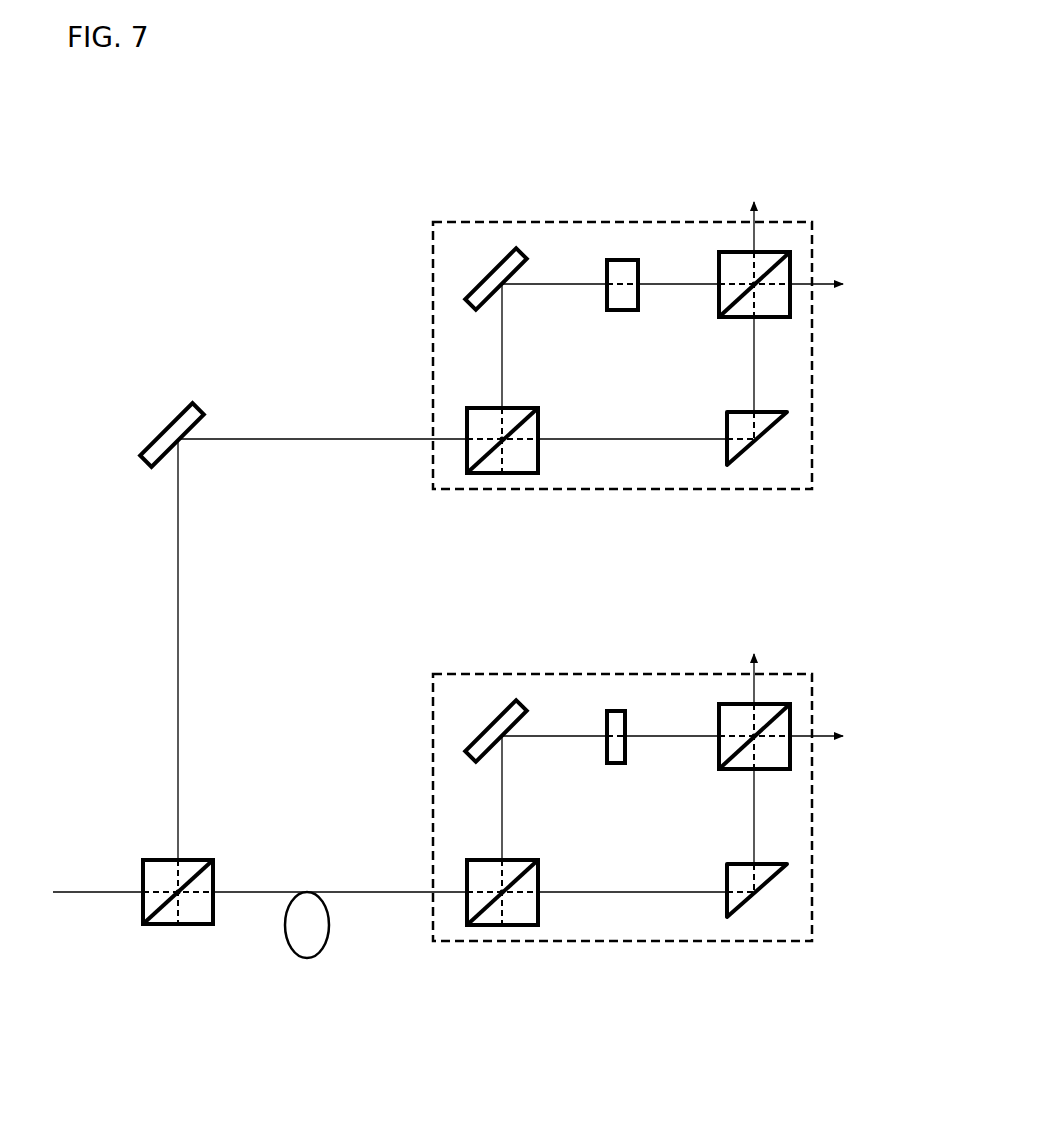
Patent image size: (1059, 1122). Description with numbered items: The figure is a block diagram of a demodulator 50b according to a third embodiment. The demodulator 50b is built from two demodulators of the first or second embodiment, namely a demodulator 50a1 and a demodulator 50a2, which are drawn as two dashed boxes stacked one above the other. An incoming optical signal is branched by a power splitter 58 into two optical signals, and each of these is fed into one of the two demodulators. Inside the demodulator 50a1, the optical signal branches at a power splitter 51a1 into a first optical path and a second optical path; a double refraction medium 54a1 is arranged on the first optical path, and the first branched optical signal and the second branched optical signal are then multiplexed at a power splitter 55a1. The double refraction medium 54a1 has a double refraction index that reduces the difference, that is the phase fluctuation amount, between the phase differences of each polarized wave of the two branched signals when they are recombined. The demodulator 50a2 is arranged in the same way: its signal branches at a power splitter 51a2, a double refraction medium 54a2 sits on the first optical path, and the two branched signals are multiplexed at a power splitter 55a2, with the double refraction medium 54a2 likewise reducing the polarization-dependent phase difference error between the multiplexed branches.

The demodulator 50b is at (207, 202).
The demodulator 50a1 is at (748, 490).
The demodulator 50a2 is at (667, 942).
The power splitter 51a1 is at (467, 410).
The power splitter 51a2 is at (510, 926).
The double refraction medium 54a1 is at (630, 259).
The double refraction medium 54a2 is at (620, 711).
The power splitter 55a1 is at (781, 251).
The power splitter 55a2 is at (790, 713).
The power splitter 58 is at (173, 925).